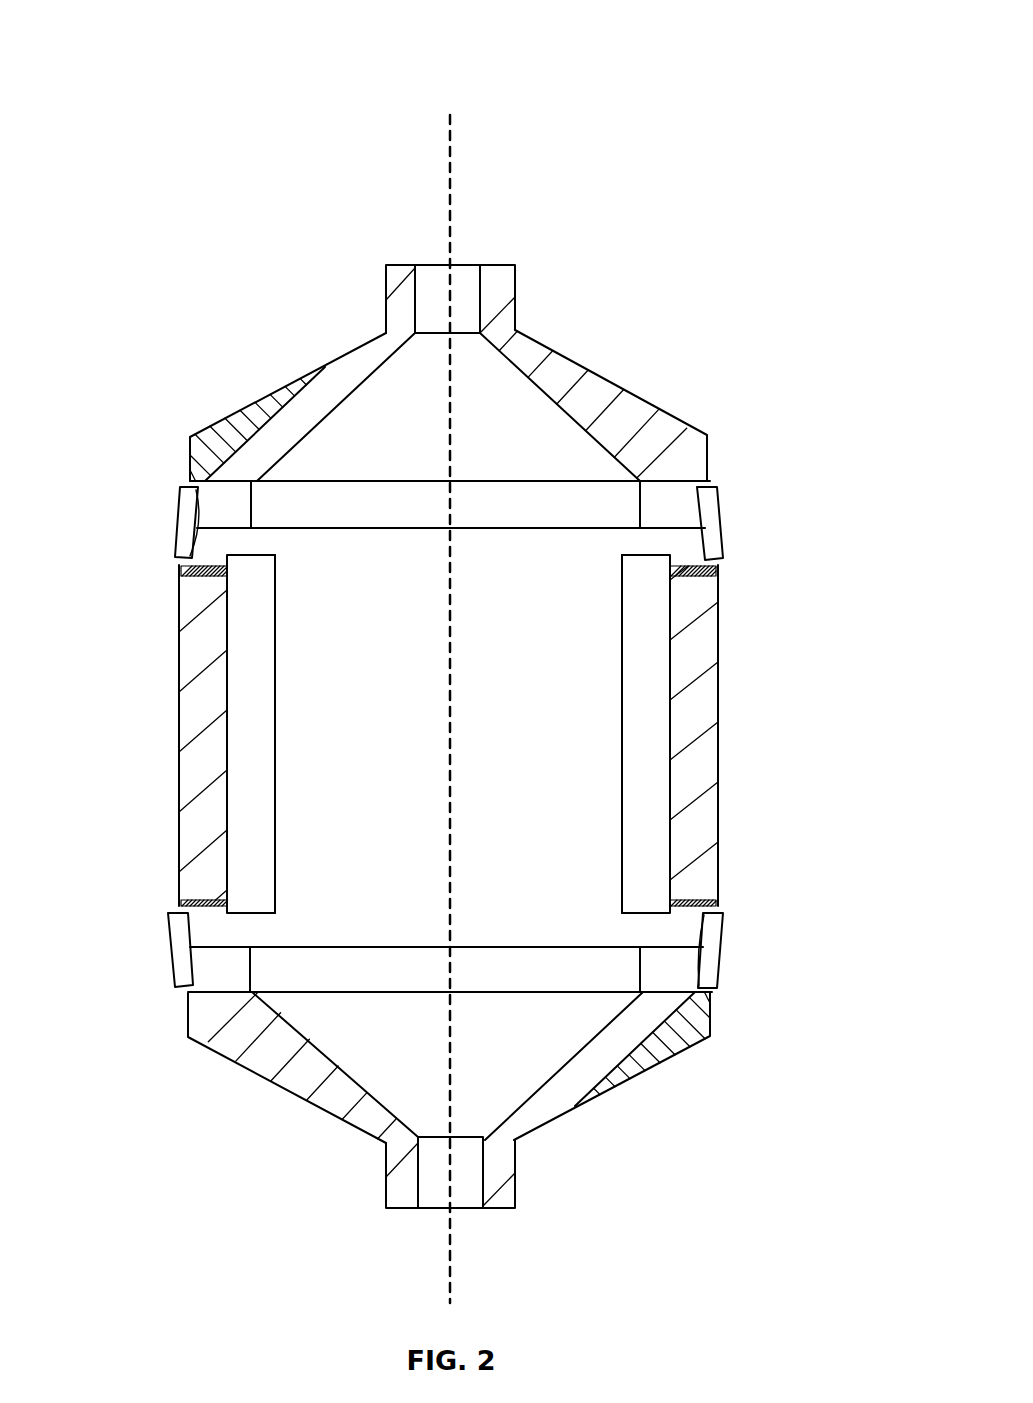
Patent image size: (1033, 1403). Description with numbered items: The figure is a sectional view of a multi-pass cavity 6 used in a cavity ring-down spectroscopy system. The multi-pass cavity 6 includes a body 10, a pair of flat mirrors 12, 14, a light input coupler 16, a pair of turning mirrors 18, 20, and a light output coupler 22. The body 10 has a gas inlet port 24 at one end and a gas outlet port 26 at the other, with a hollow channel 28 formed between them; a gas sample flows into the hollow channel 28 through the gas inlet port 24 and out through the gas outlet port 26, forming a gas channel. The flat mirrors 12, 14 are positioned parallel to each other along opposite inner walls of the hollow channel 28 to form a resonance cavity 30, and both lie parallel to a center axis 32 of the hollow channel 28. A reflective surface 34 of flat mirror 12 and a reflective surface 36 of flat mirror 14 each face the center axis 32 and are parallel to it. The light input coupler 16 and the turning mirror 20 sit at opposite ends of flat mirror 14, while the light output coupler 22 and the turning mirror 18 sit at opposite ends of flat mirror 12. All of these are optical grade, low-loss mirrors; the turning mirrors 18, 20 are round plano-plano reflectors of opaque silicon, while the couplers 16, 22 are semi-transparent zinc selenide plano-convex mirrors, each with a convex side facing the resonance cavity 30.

The multi-pass cavity 6 is at (207, 112).
The body 10 is at (232, 417).
The flat mirror 12 is at (257, 857).
The flat mirror 14 is at (641, 857).
The light input coupler 16 is at (718, 984).
The turning mirror 18 is at (175, 985).
The turning mirror 20 is at (722, 496).
The light output coupler 22 is at (180, 500).
The gas inlet port 24 is at (413, 1208).
The gas outlet port 26 is at (408, 265).
The hollow channel 28 is at (520, 450).
The resonance cavity 30 is at (412, 668).
The center axis 32 is at (455, 188).
The reflective surface 34 is at (285, 780).
The reflective surface 36 is at (610, 780).